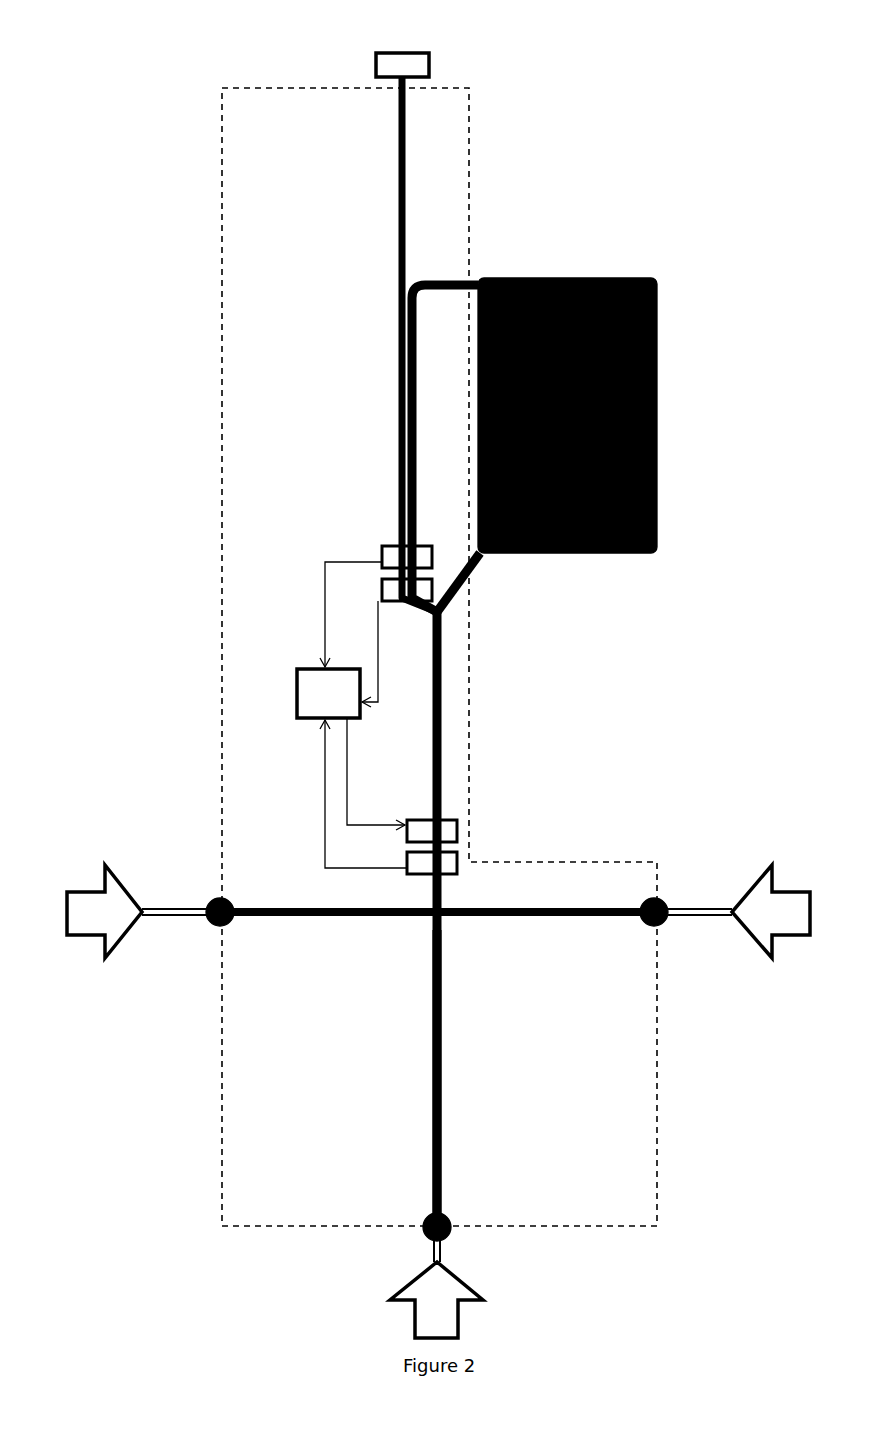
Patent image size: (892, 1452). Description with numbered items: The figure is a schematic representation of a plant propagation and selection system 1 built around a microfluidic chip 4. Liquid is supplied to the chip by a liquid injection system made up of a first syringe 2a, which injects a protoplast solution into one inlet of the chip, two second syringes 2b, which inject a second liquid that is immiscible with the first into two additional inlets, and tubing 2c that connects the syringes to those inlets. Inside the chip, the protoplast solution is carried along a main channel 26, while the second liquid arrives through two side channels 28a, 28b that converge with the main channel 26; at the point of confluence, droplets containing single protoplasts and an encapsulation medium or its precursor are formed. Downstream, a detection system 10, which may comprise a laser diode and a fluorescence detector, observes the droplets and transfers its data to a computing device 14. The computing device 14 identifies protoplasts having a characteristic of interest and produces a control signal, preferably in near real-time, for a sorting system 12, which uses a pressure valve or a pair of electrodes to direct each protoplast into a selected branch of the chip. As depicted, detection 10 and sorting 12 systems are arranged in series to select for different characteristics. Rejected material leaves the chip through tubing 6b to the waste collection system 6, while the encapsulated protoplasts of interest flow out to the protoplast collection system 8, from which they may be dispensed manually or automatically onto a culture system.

The system 1 is at (684, 90).
The first syringe 2a is at (436, 1300).
The second syringe 2b is at (438, 911).
The tubing 2c is at (153, 905).
The microfluidic chip 4 is at (471, 113).
The waste collection system 6 is at (641, 260).
The tubing 6b is at (478, 281).
The protoplast collection system 8 is at (427, 58).
The detection system 10 is at (418, 603).
The sorting system 12 is at (380, 551).
The computing device 14 is at (296, 672).
The main channel 26 is at (441, 1057).
The side channel 28a is at (320, 920).
The side channel 28b is at (553, 920).